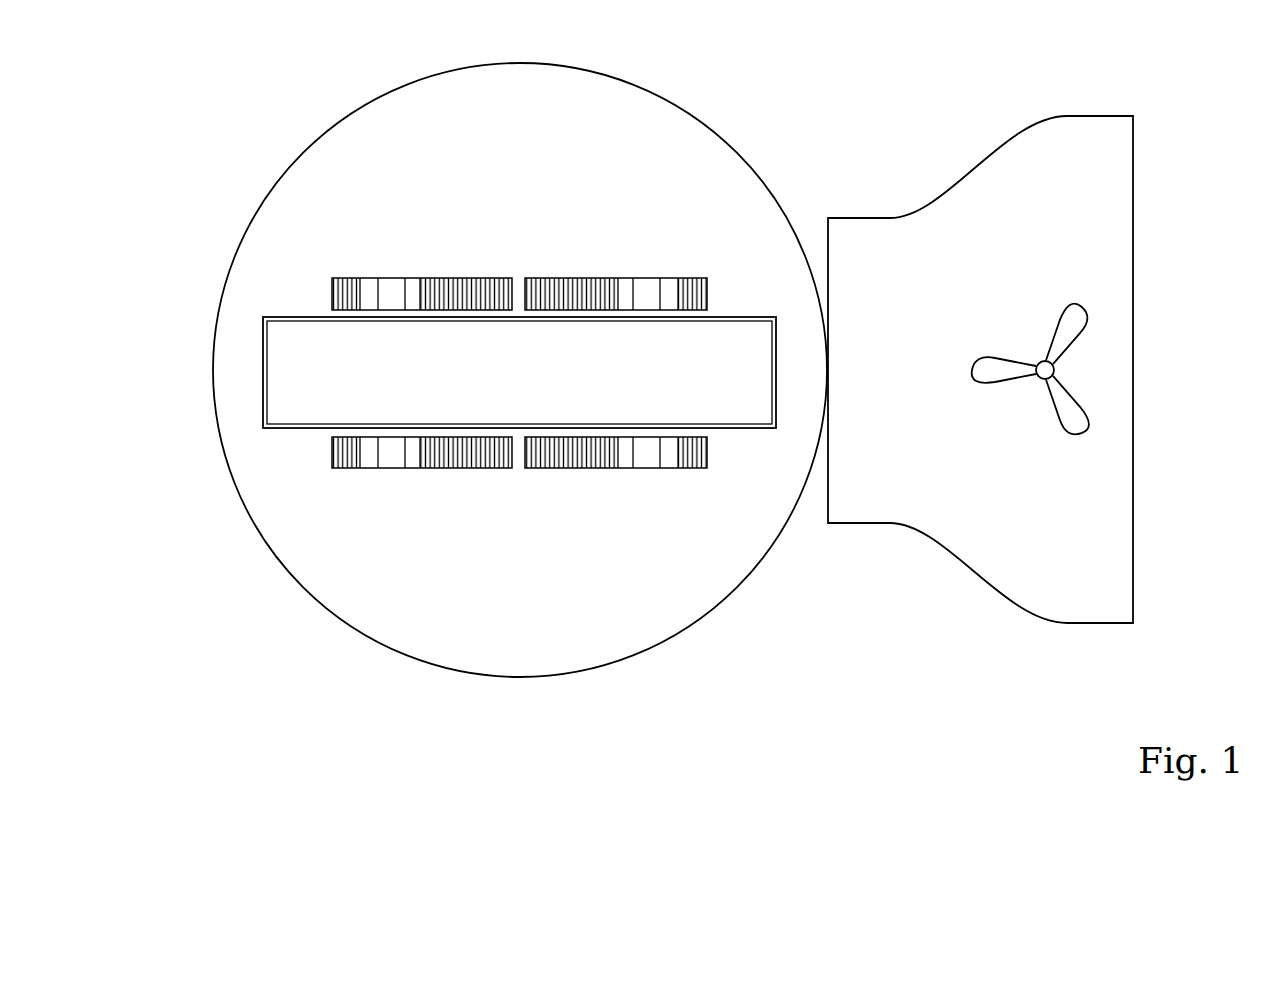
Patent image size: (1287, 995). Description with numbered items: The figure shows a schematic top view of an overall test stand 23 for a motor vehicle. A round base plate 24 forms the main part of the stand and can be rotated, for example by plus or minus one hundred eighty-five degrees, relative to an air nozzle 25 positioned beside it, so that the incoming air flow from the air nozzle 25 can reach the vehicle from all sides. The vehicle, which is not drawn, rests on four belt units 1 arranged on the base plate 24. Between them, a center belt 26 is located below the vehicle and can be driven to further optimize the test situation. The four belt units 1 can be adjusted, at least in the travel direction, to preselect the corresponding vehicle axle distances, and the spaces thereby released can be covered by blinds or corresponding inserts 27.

The belt unit 1 is at (387, 285).
The overall test stand 23 is at (762, 150).
The round base plate 24 is at (502, 105).
The air nozzle 25 is at (1078, 222).
The center belt 26 is at (303, 362).
The inserts 27 is at (494, 290).